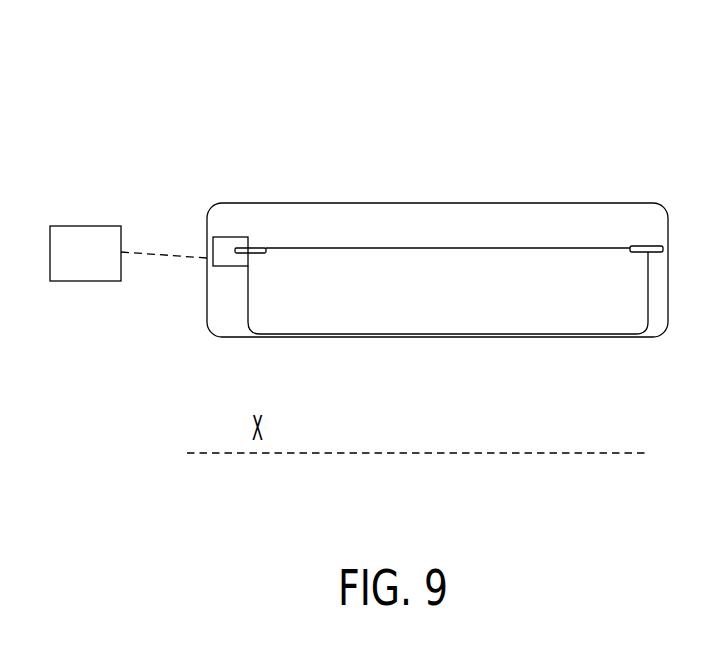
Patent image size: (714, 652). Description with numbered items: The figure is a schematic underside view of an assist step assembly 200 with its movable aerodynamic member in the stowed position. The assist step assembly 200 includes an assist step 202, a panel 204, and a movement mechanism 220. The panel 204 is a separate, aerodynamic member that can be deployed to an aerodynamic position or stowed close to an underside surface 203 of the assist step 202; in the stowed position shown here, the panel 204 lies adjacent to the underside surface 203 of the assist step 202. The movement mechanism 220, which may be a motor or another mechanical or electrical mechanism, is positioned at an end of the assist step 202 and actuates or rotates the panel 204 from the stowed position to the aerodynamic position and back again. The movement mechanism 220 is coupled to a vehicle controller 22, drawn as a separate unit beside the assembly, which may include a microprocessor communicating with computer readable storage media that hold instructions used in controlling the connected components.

The assist step assembly 200 is at (197, 92).
The vehicle controller 22 is at (85, 225).
The assist step 202 is at (290, 215).
The underside surface 203 is at (420, 223).
The panel 204 is at (313, 322).
The movement mechanism 220 is at (226, 241).